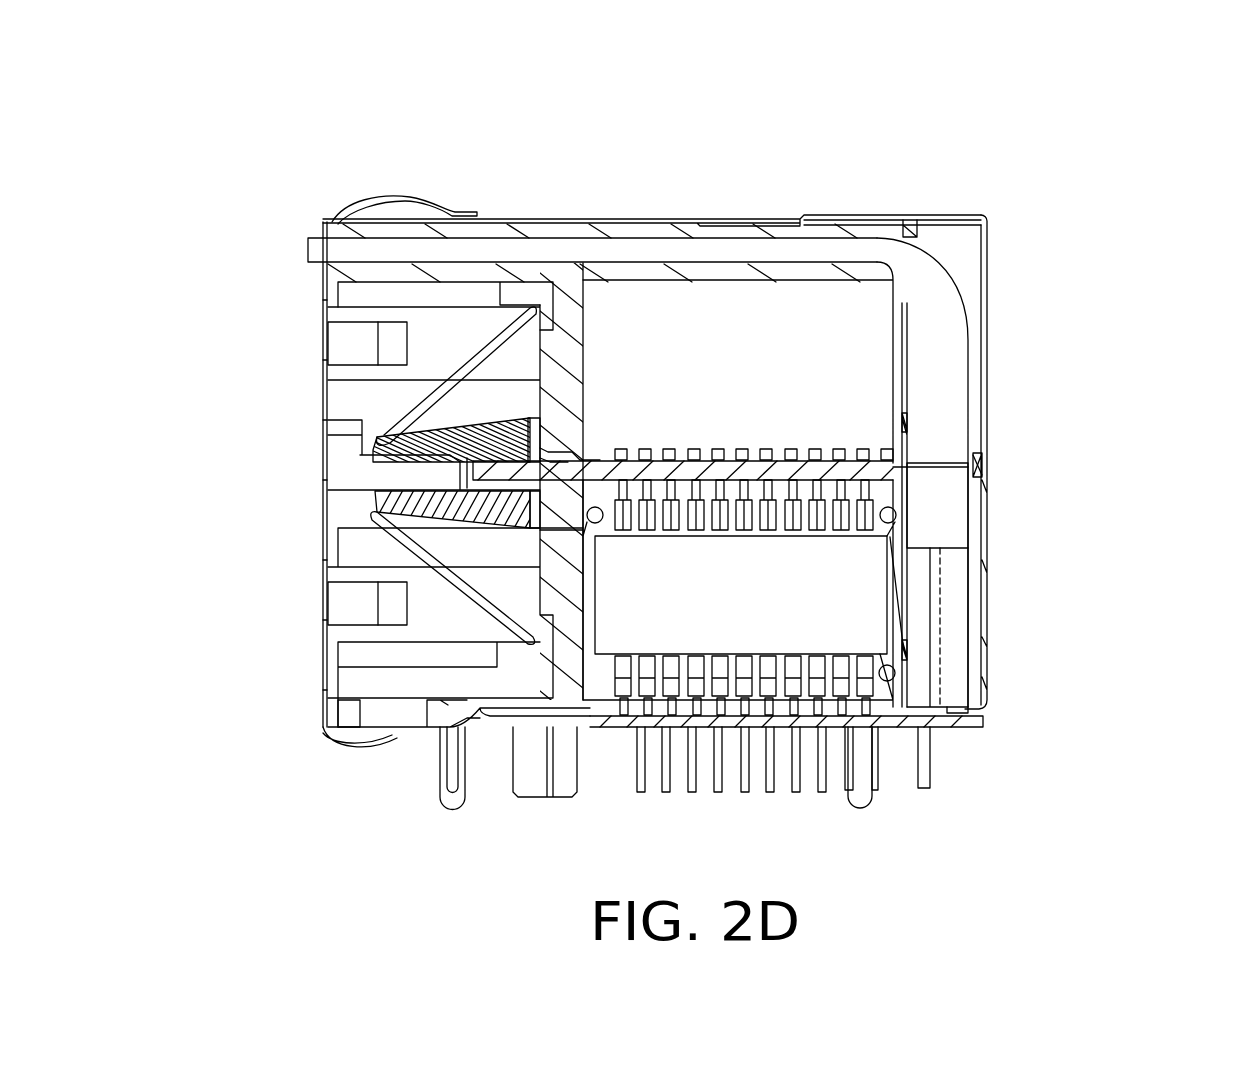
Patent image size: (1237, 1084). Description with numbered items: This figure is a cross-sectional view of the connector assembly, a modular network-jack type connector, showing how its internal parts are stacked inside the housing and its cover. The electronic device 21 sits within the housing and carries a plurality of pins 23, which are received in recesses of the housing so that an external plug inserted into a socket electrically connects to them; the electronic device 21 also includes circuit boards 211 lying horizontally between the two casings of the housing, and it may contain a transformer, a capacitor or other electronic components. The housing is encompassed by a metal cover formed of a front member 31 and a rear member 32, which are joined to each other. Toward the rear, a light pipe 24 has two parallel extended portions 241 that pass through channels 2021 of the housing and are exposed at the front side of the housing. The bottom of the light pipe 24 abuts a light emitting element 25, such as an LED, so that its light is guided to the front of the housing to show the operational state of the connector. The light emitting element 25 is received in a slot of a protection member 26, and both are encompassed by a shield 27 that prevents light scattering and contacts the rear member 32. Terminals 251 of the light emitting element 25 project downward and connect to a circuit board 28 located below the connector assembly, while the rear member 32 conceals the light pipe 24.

The electronic device 21 is at (782, 615).
The circuit boards 211 is at (678, 455).
The pins 23 is at (420, 547).
The light pipe 24 is at (943, 323).
The extended portions 241 is at (318, 248).
The light emitting element 25 is at (937, 512).
The terminals 251 is at (940, 617).
The protection member 26 is at (957, 582).
The shield 27 is at (985, 457).
The circuit board 28 is at (977, 717).
The front member 31 is at (698, 214).
The rear member 32 is at (987, 320).
The channels 2021 is at (930, 216).